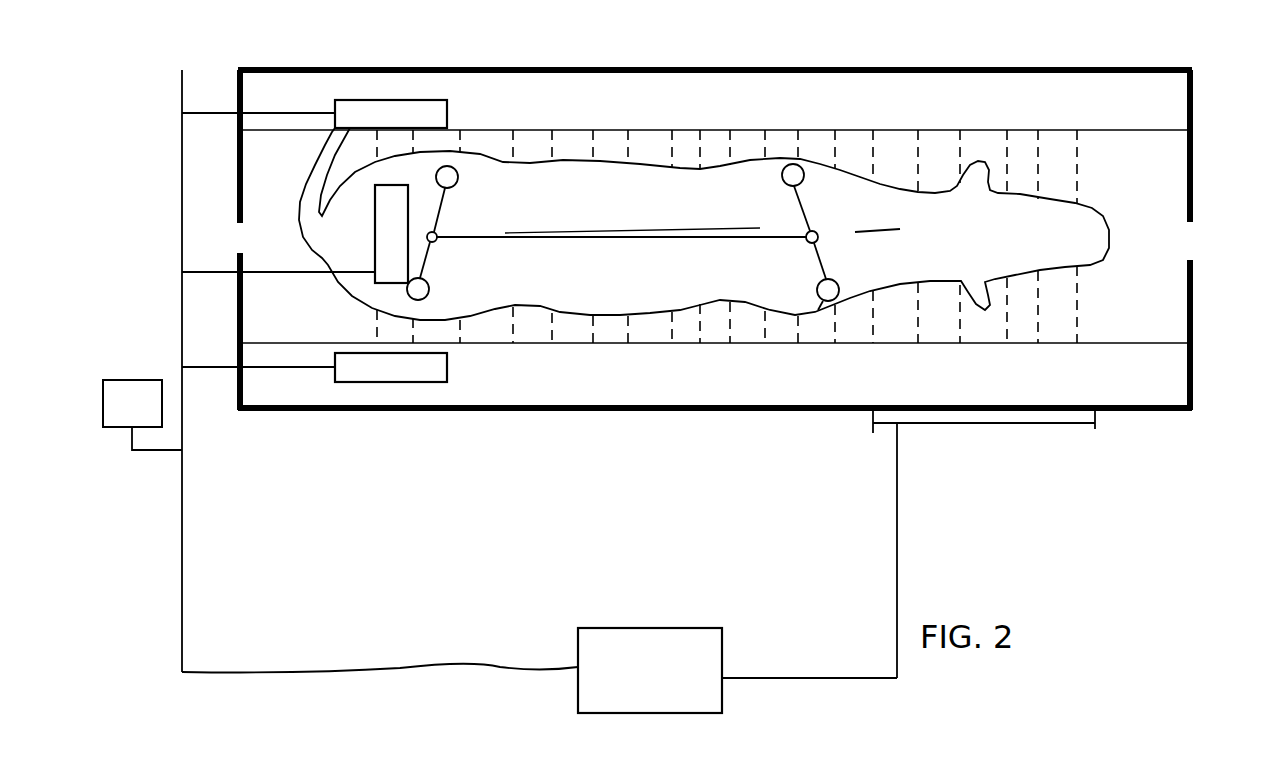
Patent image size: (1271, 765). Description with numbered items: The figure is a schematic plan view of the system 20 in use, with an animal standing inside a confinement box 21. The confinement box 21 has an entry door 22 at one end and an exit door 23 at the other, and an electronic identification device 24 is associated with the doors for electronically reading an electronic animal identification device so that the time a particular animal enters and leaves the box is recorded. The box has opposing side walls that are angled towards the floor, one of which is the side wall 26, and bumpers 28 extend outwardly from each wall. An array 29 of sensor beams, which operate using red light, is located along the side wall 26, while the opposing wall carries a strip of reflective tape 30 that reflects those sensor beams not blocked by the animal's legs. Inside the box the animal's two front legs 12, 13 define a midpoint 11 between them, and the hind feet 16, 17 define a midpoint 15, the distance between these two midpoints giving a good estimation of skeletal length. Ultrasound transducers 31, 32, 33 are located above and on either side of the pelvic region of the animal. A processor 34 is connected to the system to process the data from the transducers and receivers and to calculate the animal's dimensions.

The system 20 is at (1042, 68).
The confinement box 21 is at (1125, 66).
The entry door 22 is at (245, 236).
The exit door 23 is at (1168, 243).
The electronic identification device 24 is at (128, 380).
The side wall 26 is at (745, 75).
The bumpers 28 is at (1100, 133).
The array of sensor beams 29 is at (838, 130).
The strip of reflective tape 30 is at (775, 345).
The ultrasound transducer 31 is at (377, 235).
The ultrasound transducer 32 is at (447, 112).
The ultrasound transducer 33 is at (447, 368).
The processor 34 is at (660, 676).
The midpoint between the two front legs 11 is at (819, 232).
The front leg 12 is at (795, 176).
The front leg 13 is at (840, 258).
The midpoint between the hind feet 15 is at (438, 234).
The hind foot 16 is at (450, 177).
The hind foot 17 is at (420, 290).